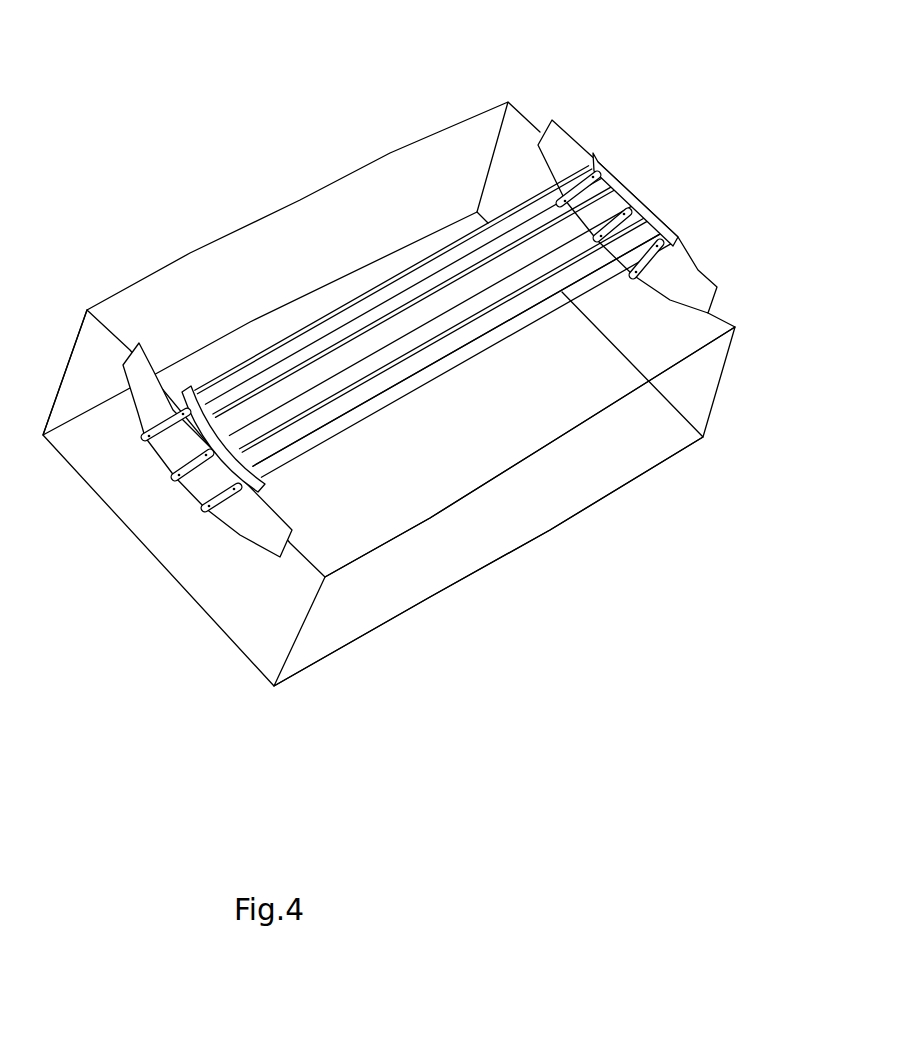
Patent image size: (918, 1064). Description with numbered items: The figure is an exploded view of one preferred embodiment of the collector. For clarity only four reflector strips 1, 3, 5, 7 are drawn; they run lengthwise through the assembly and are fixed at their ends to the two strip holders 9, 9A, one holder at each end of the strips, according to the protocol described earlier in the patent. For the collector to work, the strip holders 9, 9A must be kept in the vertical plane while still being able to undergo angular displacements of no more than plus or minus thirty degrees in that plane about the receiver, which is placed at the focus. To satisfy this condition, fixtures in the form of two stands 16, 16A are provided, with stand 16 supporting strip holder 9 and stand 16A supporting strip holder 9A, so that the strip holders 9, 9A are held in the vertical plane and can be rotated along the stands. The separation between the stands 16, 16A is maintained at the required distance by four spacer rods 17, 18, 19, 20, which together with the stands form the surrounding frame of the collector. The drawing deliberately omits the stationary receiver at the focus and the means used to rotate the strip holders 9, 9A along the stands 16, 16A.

The reflector strip 1 is at (423, 265).
The reflector strip 3 is at (390, 313).
The reflector strip 5 is at (362, 380).
The reflector strip 7 is at (310, 437).
The strip holder 9 is at (628, 193).
The strip holder 9A is at (200, 437).
The stand 16 is at (697, 270).
The stand 16A is at (253, 540).
The spacer rod 17 is at (573, 437).
The spacer rod 18 is at (487, 567).
The spacer rod 19 is at (88, 412).
The spacer rod 20 is at (481, 112).